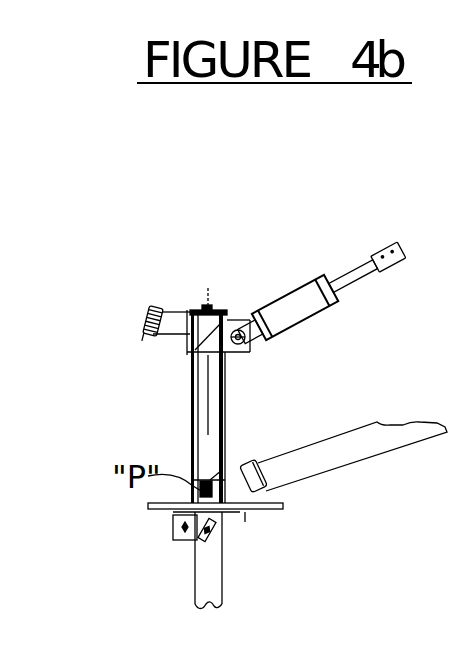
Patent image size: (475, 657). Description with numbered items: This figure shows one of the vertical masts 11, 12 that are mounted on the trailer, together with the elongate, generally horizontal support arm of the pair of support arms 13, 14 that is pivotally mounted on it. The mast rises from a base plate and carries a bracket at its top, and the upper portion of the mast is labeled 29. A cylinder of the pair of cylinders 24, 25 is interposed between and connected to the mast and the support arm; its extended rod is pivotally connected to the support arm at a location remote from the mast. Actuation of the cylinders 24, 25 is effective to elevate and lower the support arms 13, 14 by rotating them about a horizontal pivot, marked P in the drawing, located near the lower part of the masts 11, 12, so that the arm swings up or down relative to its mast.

The mast 11 is at (145, 562).
The mast 12 is at (208, 568).
The support arm 13 is at (346, 448).
The support arm 14 is at (0, 188).
The cylinder 24 is at (321, 276).
The cylinder 25 is at (302, 300).
The column 29 is at (208, 400).